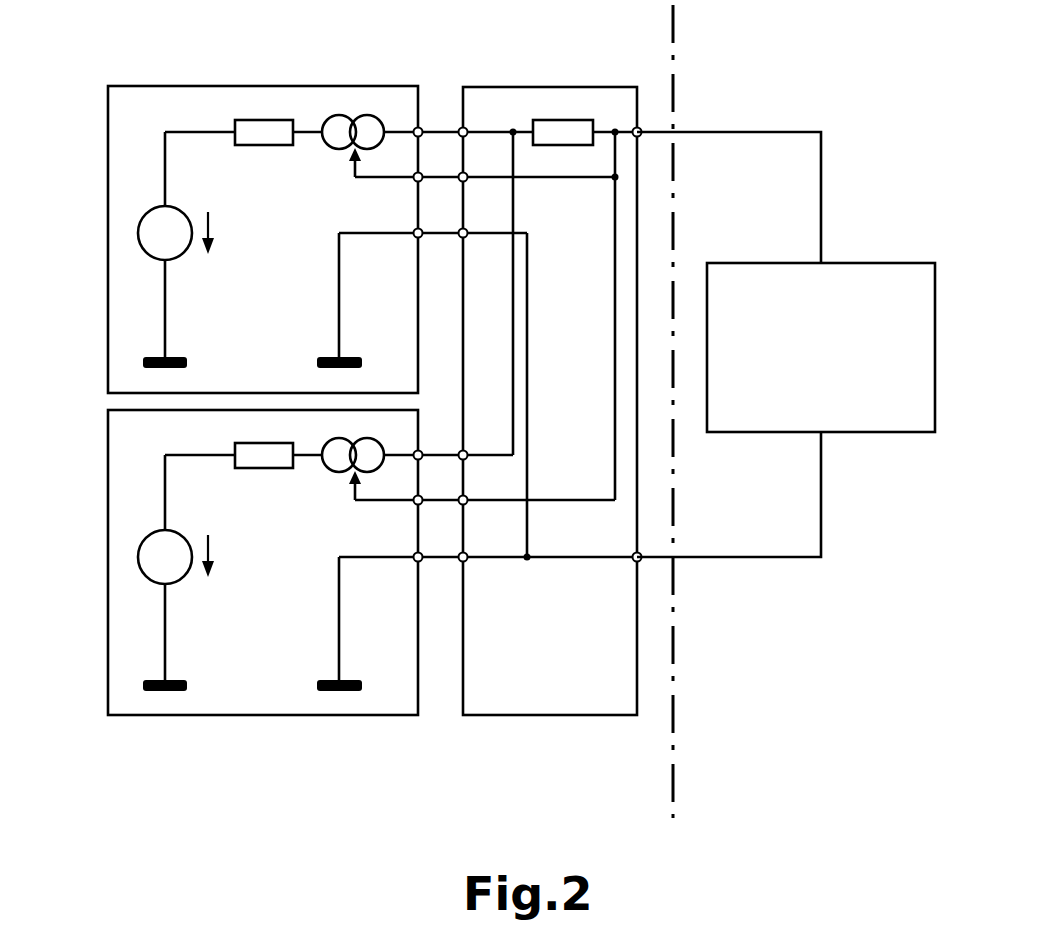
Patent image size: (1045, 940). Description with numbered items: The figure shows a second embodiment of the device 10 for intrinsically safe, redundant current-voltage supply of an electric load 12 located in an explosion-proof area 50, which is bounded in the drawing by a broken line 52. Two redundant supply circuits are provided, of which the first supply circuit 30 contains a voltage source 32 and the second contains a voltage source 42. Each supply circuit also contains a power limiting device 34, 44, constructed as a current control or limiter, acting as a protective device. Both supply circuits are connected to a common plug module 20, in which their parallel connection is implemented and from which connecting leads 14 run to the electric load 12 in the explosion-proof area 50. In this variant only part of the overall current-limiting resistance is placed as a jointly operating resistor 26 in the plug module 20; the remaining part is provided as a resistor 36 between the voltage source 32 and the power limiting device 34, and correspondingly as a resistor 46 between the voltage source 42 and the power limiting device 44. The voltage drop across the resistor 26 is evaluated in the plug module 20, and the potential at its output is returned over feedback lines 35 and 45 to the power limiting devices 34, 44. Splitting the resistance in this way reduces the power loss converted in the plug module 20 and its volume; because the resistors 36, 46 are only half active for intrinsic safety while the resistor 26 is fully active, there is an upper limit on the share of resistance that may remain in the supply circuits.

The device 10 is at (84, 86).
The electric load 12 is at (836, 362).
The connecting leads 14 is at (822, 173).
The plug module 20 is at (565, 652).
The resistor 26 is at (565, 118).
The supply circuit 30 is at (252, 86).
The voltage source 32 is at (173, 210).
The power limiting device 34 is at (328, 116).
The feedback line 35 is at (380, 178).
The resistor 36 is at (259, 146).
The voltage source 42 is at (173, 532).
The power limiting device 44 is at (326, 466).
The feedback line 45 is at (380, 500).
The resistor 46 is at (243, 469).
The explosion-proof area 50 is at (848, 95).
The broken line 52 is at (675, 661).